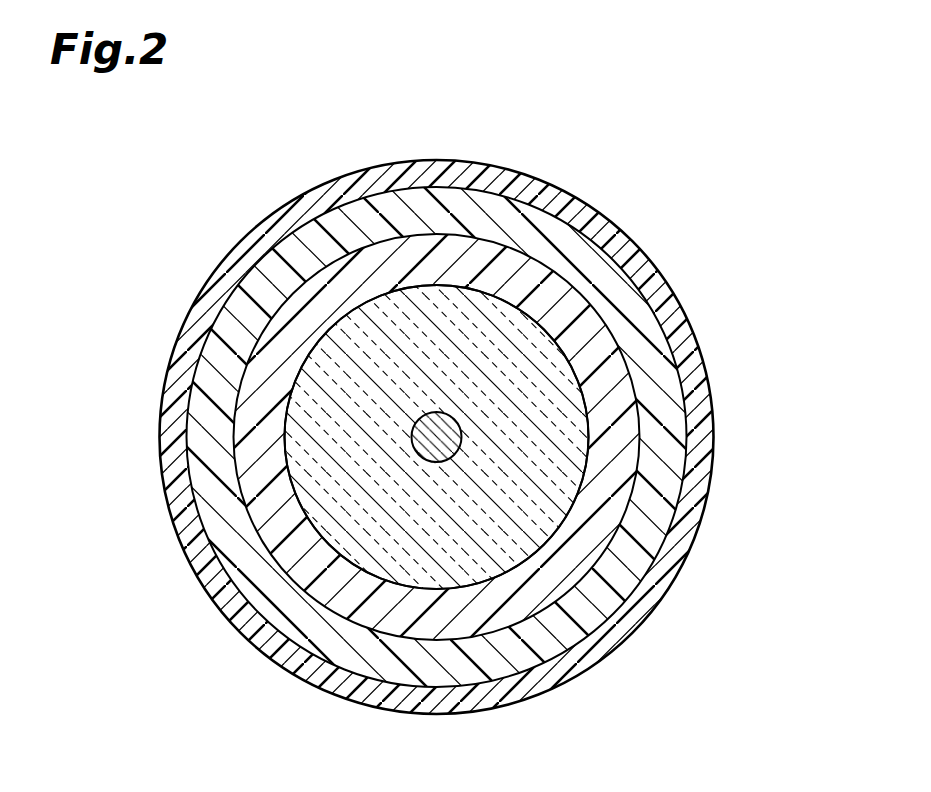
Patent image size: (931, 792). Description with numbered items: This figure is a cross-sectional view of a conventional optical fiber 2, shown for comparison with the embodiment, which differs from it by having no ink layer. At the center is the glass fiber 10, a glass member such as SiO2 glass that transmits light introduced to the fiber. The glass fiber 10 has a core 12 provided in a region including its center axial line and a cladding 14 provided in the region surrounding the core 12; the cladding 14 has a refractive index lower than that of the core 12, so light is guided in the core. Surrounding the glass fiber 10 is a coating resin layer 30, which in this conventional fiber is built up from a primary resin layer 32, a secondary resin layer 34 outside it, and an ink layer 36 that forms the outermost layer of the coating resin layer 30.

The conventional optical fiber 2 is at (524, 123).
The glass fiber 10 is at (656, 174).
The core 12 is at (457, 424).
The cladding 14 is at (557, 410).
The coating resin layer 30 is at (783, 453).
The primary resin layer 32 is at (632, 457).
The secondary resin layer 34 is at (665, 522).
The ink layer 36 is at (670, 580).